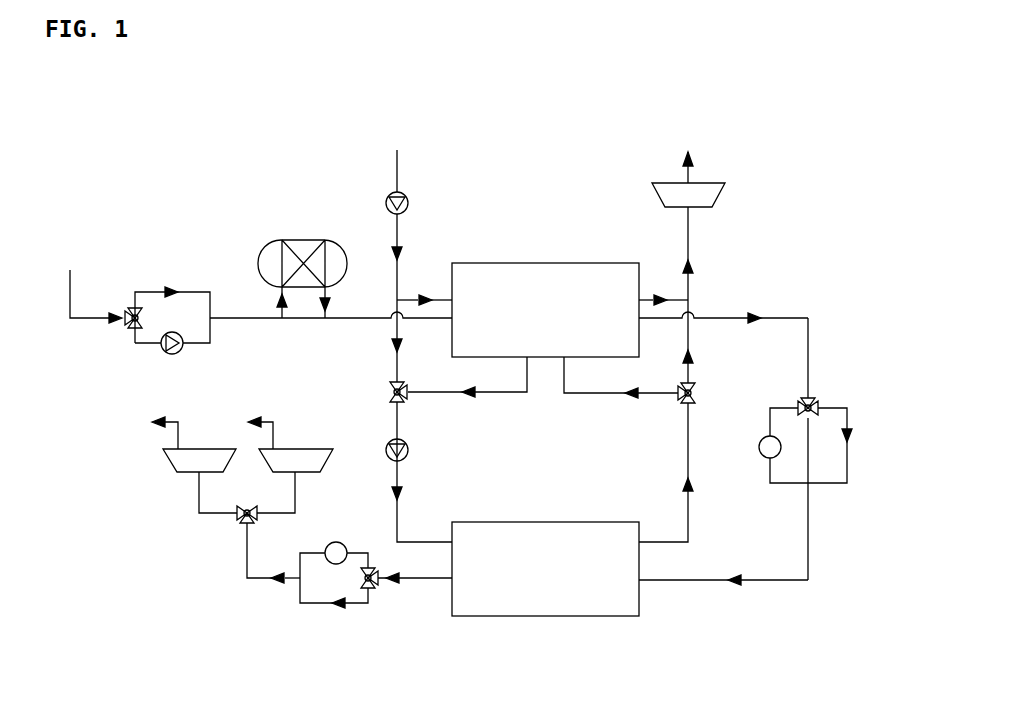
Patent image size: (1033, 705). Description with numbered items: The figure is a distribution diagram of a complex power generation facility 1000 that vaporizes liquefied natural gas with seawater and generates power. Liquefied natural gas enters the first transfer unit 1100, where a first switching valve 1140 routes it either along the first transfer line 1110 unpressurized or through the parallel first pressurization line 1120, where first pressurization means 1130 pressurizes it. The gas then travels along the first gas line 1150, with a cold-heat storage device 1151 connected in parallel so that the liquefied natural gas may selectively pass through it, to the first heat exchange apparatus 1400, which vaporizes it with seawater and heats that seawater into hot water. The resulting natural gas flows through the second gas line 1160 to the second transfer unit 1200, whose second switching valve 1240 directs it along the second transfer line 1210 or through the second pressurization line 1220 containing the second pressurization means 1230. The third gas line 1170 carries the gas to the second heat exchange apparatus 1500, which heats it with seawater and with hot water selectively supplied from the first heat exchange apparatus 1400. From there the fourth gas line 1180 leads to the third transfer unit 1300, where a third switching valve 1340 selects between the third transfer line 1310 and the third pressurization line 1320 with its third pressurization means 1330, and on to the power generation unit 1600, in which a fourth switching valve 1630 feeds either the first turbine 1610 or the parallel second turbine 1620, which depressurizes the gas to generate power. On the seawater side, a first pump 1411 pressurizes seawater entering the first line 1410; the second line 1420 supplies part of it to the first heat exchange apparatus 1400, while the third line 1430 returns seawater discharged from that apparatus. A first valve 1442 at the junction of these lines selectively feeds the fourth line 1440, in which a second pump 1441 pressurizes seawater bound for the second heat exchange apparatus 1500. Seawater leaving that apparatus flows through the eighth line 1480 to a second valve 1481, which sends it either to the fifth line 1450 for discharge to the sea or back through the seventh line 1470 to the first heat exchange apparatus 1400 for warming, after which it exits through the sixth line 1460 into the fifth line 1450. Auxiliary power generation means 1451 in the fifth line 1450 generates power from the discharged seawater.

The complex power generation facility 1000 is at (140, 146).
The first transfer unit 1100 is at (127, 273).
The first transfer line 1110 is at (188, 292).
The first pressurization line 1120 is at (145, 343).
The first pressurization means 1130 is at (185, 348).
The first switching valve 1140 is at (125, 325).
The first gas line 1150 is at (260, 318).
The cold-heat storage device 1151 is at (297, 240).
The second gas line 1160 is at (783, 313).
The third gas line 1170 is at (772, 583).
The fourth gas line 1180 is at (425, 582).
The second transfer unit 1200 is at (839, 382).
The second transfer line 1210 is at (850, 465).
The second pressurization line 1220 is at (767, 472).
The second pressurization means 1230 is at (763, 433).
The second switching valve 1240 is at (803, 397).
The third transfer unit 1300 is at (290, 611).
The third transfer line 1310 is at (317, 605).
The third pressurization line 1320 is at (310, 550).
The third pressurization means 1330 is at (335, 540).
The third switching valve 1340 is at (383, 592).
The first heat exchange apparatus 1400 is at (535, 246).
The first line 1410 is at (399, 227).
The first pump 1411 is at (405, 195).
The second line 1420 is at (408, 297).
The third line 1430 is at (505, 395).
The fourth line 1440 is at (400, 525).
The second pump 1441 is at (410, 455).
The first valve 1442 is at (388, 385).
The fifth line 1450 is at (690, 233).
The auxiliary power generation means 1451 is at (708, 182).
The sixth line 1460 is at (652, 297).
The seventh line 1470 is at (592, 397).
The eighth line 1480 is at (686, 453).
The second valve 1481 is at (695, 385).
The second heat exchange apparatus 1500 is at (553, 511).
The power generation unit 1600 is at (183, 519).
The first turbine 1610 is at (165, 467).
The second turbine 1620 is at (313, 448).
The fourth switching valve 1630 is at (237, 520).